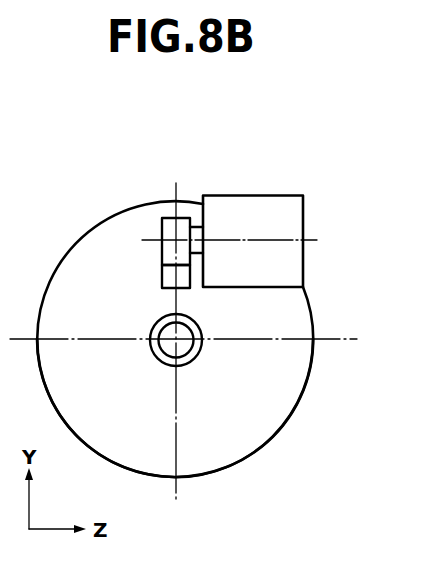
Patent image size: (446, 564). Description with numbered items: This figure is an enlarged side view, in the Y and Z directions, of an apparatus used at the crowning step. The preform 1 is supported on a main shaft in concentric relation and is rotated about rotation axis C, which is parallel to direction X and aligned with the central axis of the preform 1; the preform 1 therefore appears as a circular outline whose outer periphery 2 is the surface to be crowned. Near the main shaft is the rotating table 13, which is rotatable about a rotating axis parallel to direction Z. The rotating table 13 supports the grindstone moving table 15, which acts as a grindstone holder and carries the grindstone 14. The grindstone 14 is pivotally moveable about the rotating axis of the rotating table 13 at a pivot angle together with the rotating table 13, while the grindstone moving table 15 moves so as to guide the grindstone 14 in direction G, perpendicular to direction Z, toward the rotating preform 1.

The preform 1 is at (250, 473).
The outer peripheral surface of workpiece 2 is at (273, 412).
The rotating table 13 is at (257, 205).
The grindstone 14 is at (166, 278).
The grindstone moving table 15 is at (168, 227).
The rotation axis C is at (177, 341).